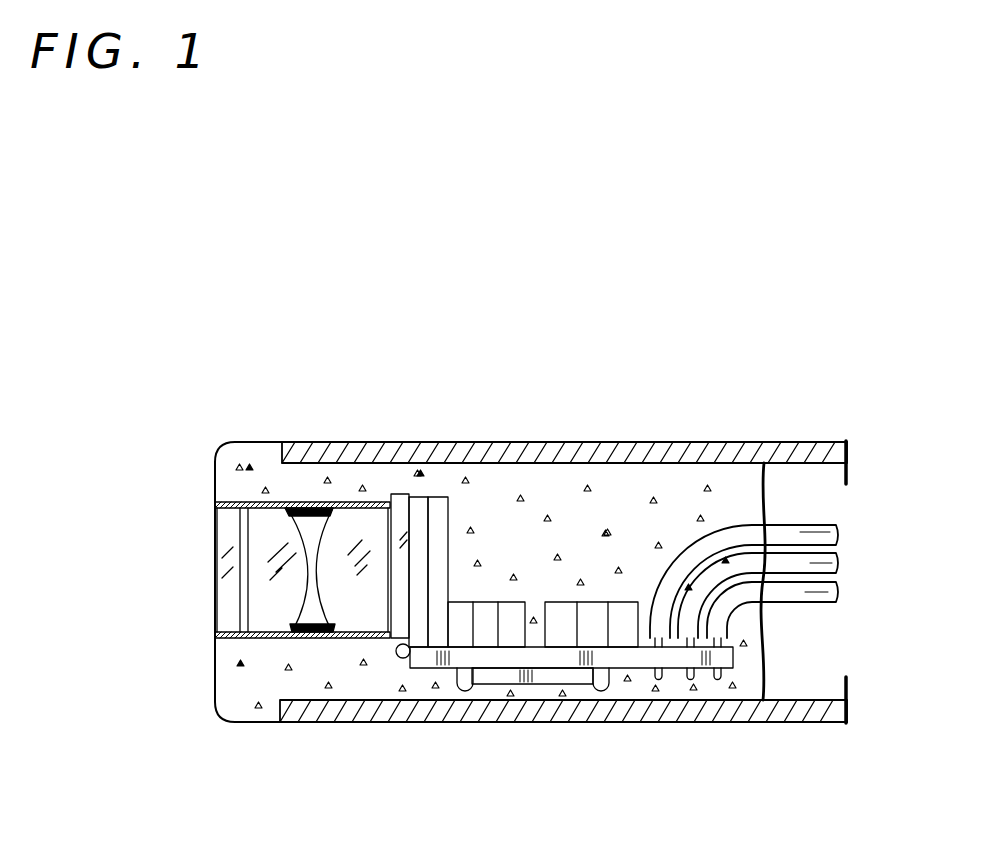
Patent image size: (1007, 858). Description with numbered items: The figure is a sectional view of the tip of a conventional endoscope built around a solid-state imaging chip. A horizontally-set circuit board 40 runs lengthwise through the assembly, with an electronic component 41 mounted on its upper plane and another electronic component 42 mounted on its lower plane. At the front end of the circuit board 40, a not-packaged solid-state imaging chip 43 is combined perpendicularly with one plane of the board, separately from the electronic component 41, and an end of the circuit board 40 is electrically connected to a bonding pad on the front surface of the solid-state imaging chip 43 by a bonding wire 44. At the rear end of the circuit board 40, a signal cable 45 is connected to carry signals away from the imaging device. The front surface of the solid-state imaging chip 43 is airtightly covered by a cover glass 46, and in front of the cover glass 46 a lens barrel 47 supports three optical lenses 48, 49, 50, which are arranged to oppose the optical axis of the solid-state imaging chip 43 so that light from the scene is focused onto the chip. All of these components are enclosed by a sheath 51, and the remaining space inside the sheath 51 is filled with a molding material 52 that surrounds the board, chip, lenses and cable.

The circuit board 40 is at (552, 660).
The electronic component 41 is at (513, 602).
The electronic component 42 is at (503, 677).
The solid-state imaging chip 43 is at (418, 497).
The bonding wire 44 is at (400, 658).
The signal cable 45 is at (832, 567).
The cover glass 46 is at (398, 494).
The lens barrel 47 is at (255, 502).
The optical lens 48 is at (228, 606).
The optical lens 49 is at (268, 607).
The optical lens 50 is at (340, 597).
The sheath 51 is at (732, 453).
The molding material 52 is at (668, 507).